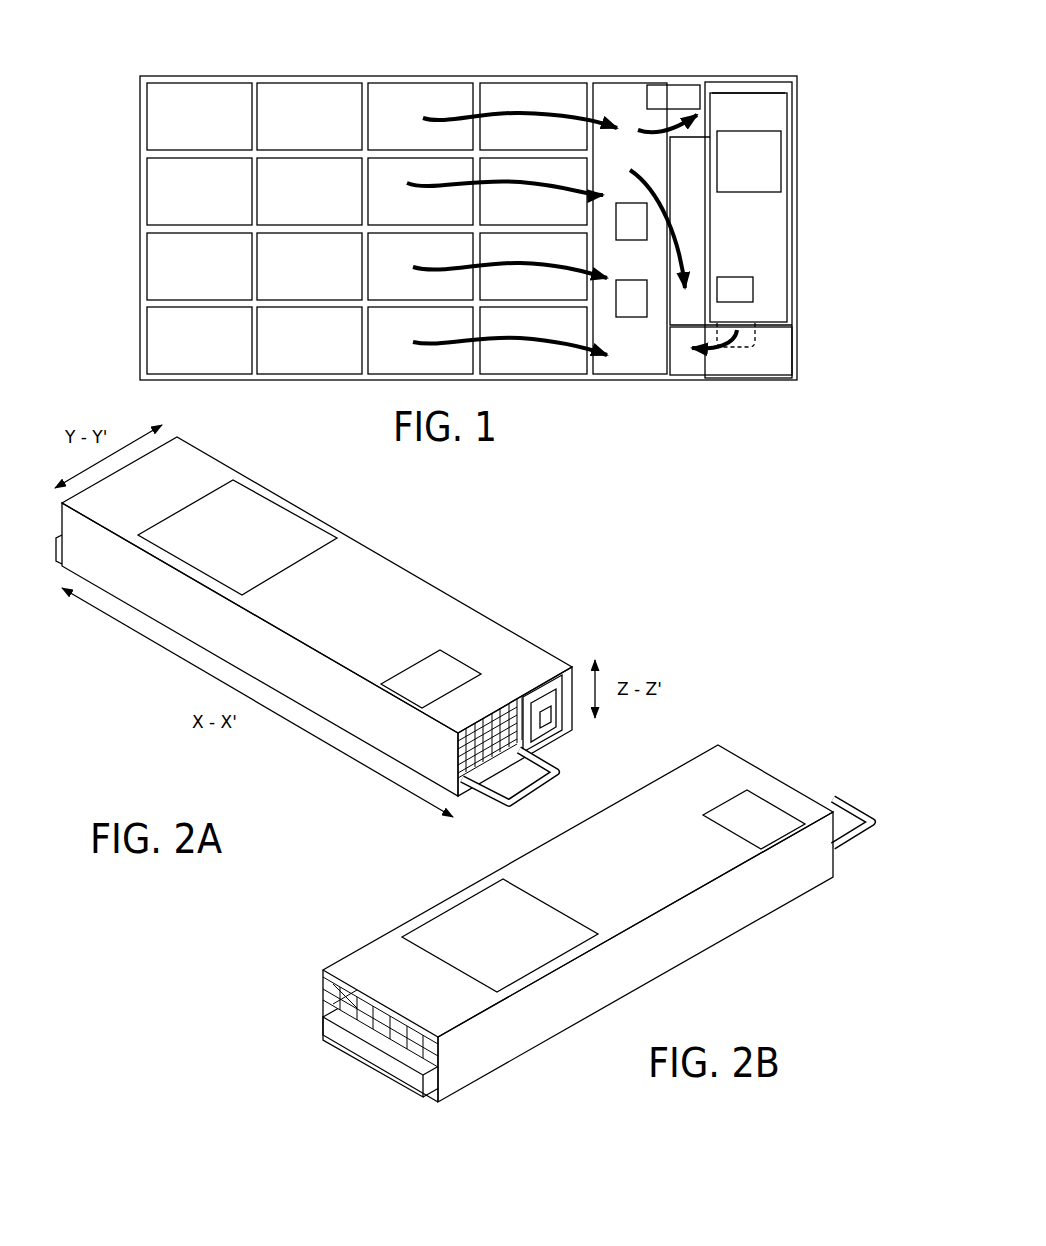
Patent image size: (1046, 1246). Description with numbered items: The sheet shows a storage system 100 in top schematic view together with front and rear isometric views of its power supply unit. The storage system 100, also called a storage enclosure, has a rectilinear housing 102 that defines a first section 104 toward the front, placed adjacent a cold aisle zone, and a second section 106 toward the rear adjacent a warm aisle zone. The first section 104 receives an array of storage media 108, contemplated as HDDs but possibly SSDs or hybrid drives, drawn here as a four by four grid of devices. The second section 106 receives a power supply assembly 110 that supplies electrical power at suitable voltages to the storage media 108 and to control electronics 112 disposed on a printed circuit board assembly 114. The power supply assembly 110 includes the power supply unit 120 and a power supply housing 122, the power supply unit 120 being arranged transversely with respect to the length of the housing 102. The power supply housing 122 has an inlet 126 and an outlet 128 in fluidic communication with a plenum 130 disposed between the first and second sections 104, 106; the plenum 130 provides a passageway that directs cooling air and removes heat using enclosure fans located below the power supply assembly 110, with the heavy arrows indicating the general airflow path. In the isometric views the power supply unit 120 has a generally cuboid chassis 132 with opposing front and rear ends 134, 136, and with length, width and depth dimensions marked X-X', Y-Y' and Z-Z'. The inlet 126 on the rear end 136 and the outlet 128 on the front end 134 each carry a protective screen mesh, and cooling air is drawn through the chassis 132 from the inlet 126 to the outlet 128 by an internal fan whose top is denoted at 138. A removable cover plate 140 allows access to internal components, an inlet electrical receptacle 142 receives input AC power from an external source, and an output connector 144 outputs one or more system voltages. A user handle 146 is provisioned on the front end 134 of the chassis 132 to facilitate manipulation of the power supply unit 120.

In FIG. 1, the storage system 100 is at (170, 47).
In FIG. 1, the housing 102 is at (430, 76).
In FIG. 1, the first section 104 is at (333, 206).
In FIG. 1, the second section 106 is at (823, 200).
In FIG. 1, the storage media 108 is at (288, 108).
In FIG. 1, the power supply assembly 110 is at (795, 107).
In FIG. 1, the control electronics 112 is at (633, 308).
In FIG. 1, the printed circuit board assembly 114 is at (628, 110).
In FIG. 1, the power supply unit 120 is at (750, 110).
In FIG. 2A, the power supply unit 120 is at (345, 661).
In FIG. 2B, the power supply unit 120 is at (512, 884).
In FIG. 1, the power supply housing 122 is at (773, 355).
In FIG. 1, the inlet 126 is at (732, 85).
In FIG. 2B, the inlet 126 is at (360, 1008).
In FIG. 1, the outlet 128 is at (683, 355).
In FIG. 2A, the outlet 128 is at (457, 740).
In FIG. 1, the plenum 130 is at (700, 202).
In FIG. 2A, the chassis 132 is at (383, 595).
In FIG. 2A, the front end 134 is at (482, 827).
In FIG. 2B, the rear end 136 is at (290, 1097).
In FIG. 2A, the top of internal fan 138 is at (437, 677).
In FIG. 2B, the top of internal fan 138 is at (752, 825).
In FIG. 2A, the removable cover plate 140 is at (288, 528).
In FIG. 2B, the removable cover plate 140 is at (452, 945).
In FIG. 2A, the inlet electrical receptacle 142 is at (547, 687).
In FIG. 2B, the output connector 144 is at (347, 1050).
In FIG. 1, the user handle 146 is at (737, 350).
In FIG. 2A, the user handle 146 is at (557, 783).
In FIG. 2B, the user handle 146 is at (862, 805).